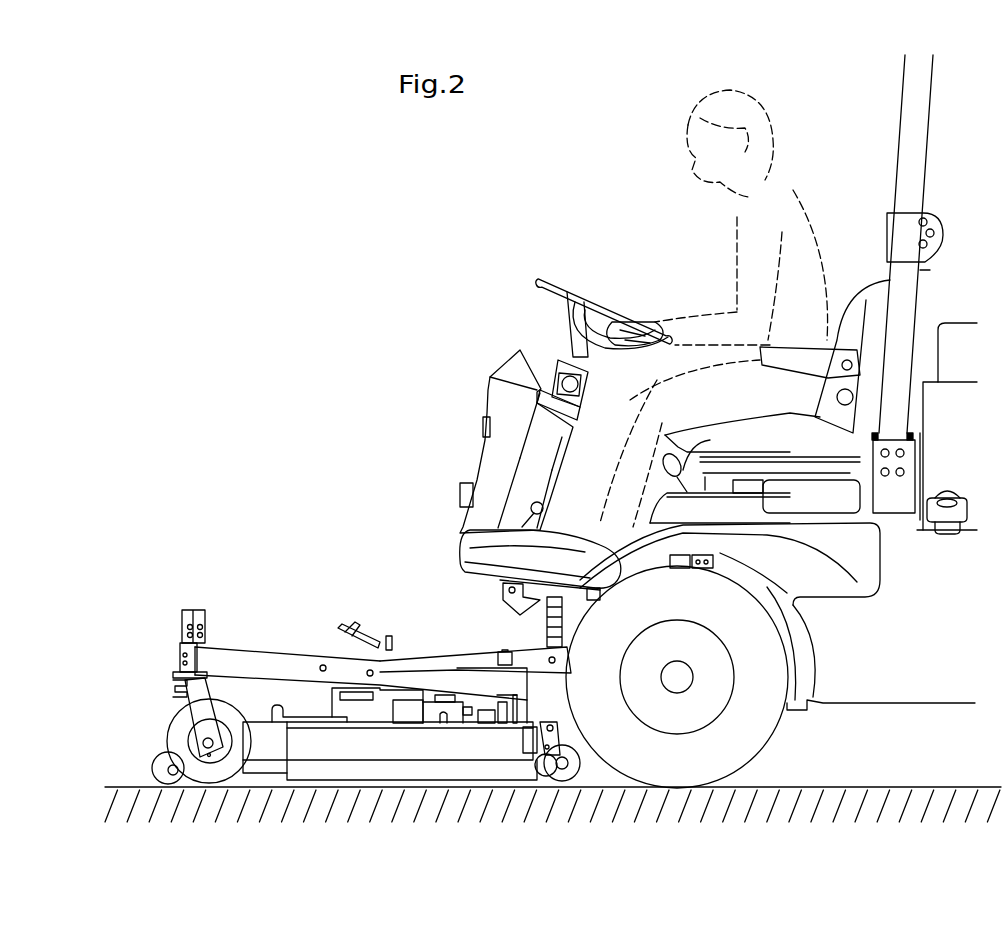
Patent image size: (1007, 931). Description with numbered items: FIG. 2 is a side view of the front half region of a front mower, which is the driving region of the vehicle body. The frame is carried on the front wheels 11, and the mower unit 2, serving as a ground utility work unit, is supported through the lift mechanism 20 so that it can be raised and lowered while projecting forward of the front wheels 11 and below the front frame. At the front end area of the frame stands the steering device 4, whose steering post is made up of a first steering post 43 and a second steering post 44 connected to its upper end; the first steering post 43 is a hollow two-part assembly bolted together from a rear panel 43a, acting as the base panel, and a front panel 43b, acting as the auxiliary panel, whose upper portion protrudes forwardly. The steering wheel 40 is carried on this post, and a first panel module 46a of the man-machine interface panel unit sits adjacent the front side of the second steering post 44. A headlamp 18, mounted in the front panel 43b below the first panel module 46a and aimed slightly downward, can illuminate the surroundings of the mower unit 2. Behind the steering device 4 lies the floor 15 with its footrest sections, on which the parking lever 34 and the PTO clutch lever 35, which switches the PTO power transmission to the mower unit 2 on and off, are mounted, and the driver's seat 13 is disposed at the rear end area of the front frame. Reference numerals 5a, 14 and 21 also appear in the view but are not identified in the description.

The mower unit 2 is at (366, 711).
The steering device 4 is at (527, 250).
The column cover 5a is at (492, 422).
The first panel module 46a is at (531, 352).
The front wheels 11 is at (770, 745).
The driver's seat 13 is at (853, 307).
The ROPS roll bar 14 is at (927, 177).
The floor 15 is at (443, 560).
The headlamp 18 is at (480, 423).
The lift mechanism 20 is at (532, 639).
The mower deck 21 is at (443, 742).
The parking lever 34 is at (500, 578).
The PTO clutch lever 35 is at (690, 442).
The steering wheel 40 is at (582, 305).
The first steering post 43 is at (468, 464).
The rear panel 43a is at (565, 445).
The front panel 43b is at (478, 458).
The second steering post 44 is at (590, 394).